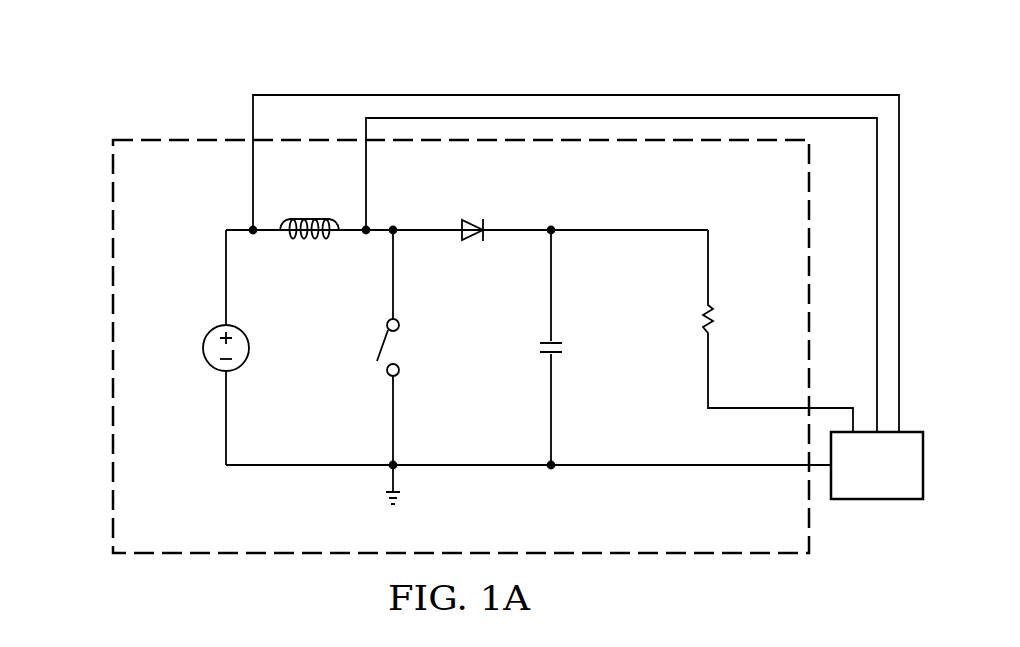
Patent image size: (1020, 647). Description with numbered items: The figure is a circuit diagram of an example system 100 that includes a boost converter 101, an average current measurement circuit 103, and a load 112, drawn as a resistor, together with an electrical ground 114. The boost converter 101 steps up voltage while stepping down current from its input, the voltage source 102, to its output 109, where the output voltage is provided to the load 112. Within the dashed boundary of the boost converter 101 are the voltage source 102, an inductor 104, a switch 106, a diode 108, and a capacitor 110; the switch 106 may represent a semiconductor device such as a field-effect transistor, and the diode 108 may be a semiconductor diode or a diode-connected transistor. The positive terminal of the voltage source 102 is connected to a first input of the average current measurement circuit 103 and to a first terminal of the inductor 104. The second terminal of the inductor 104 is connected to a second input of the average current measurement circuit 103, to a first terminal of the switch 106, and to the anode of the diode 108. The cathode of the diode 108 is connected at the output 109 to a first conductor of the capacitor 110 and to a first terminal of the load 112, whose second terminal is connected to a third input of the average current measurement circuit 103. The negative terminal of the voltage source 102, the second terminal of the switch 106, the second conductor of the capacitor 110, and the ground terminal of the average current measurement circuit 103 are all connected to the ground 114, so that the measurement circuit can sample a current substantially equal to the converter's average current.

The system 100 is at (361, 60).
The boost converter 101 is at (113, 252).
The voltage source 102 is at (203, 348).
The average current measurement circuit 103 is at (898, 478).
The inductor 104 is at (300, 218).
The switch 106 is at (384, 338).
The diode 108 is at (476, 217).
The output 109 is at (556, 237).
The capacitor 110 is at (565, 349).
The load 112 is at (713, 316).
The electrical ground 114 is at (383, 501).